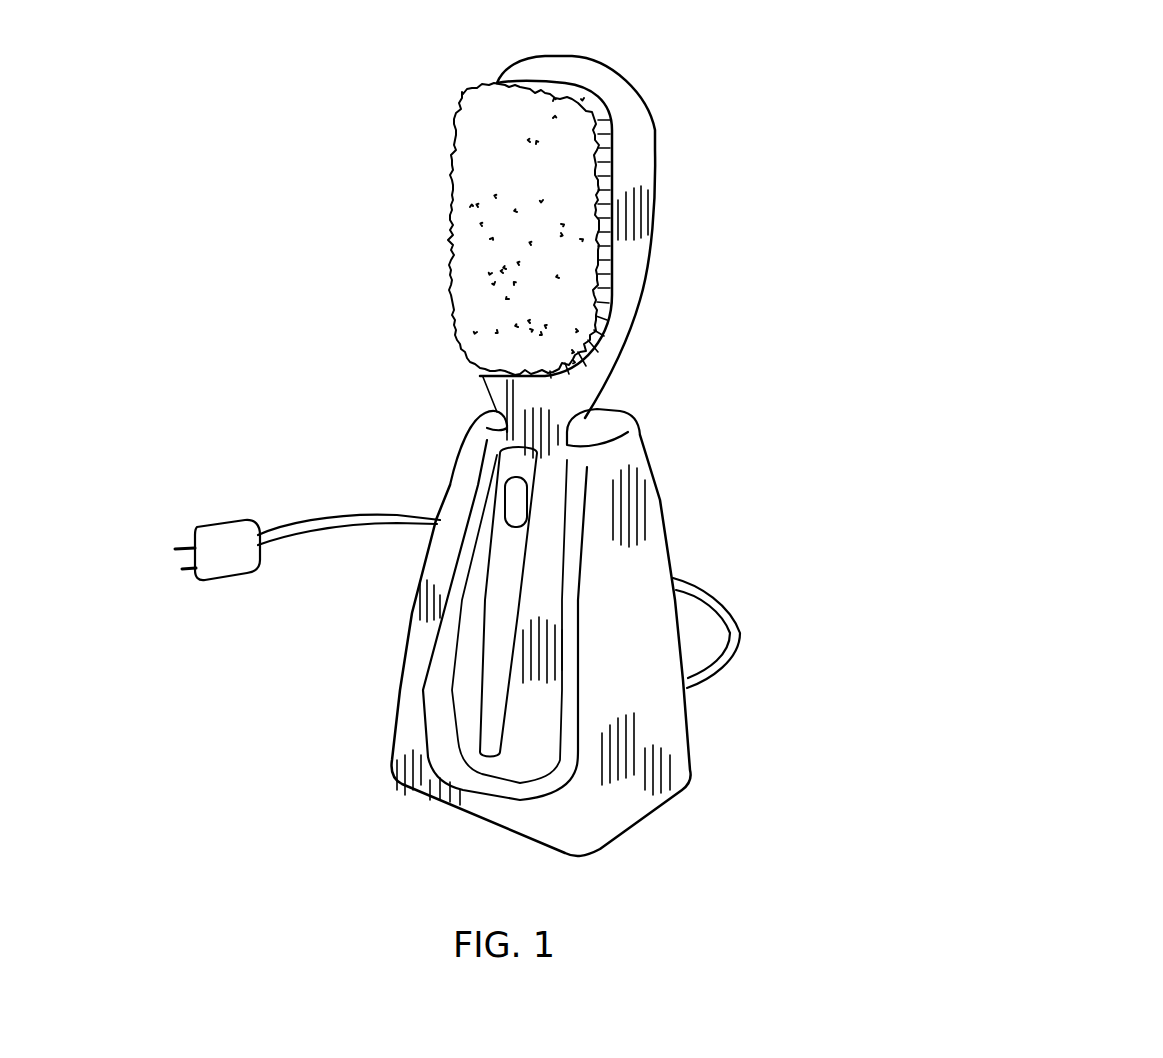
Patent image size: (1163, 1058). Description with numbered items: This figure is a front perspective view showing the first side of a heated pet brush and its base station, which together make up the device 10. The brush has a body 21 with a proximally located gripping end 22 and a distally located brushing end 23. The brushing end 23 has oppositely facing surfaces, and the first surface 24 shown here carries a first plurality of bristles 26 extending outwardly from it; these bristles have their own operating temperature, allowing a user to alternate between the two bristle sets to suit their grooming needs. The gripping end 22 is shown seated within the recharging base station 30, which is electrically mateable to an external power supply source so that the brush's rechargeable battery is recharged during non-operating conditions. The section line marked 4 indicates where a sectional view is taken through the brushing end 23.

The brush cleaning system 10 is at (1068, 202).
The brush head 21 is at (655, 127).
The recessed front panel 22 is at (553, 560).
The brush head rim 23 is at (640, 292).
The bristle pad 24 is at (438, 181).
The bristles 26 is at (480, 273).
The base / charging stand 30 is at (650, 718).
The section line 4- 4 is at (758, 190).